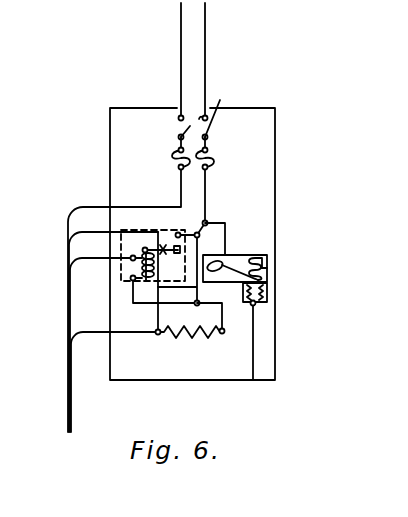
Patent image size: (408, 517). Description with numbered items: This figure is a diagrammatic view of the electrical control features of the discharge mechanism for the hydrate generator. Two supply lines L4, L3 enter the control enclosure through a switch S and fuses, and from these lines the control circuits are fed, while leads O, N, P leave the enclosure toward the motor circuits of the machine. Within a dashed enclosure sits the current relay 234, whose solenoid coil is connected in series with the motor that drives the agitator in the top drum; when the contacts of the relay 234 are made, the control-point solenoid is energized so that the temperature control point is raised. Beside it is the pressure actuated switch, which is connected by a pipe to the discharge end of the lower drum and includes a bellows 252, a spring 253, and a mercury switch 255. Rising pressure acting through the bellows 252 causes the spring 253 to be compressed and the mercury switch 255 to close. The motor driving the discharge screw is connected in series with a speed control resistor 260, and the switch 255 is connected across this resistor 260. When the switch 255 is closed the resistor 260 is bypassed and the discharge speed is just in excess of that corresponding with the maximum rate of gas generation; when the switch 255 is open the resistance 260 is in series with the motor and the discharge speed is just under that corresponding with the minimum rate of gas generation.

The current relay 234 is at (137, 229).
The mercury switch 255 is at (234, 254).
The spring 253 is at (262, 271).
The bellows 252 is at (256, 306).
The speed control resistor 260 is at (184, 335).
The switch S is at (206, 120).
The line L4 fuse L4 is at (150, 172).
The line L3 fuse L3 is at (212, 180).
The lead O is at (113, 323).
The lead N is at (101, 337).
The lead P is at (114, 374).